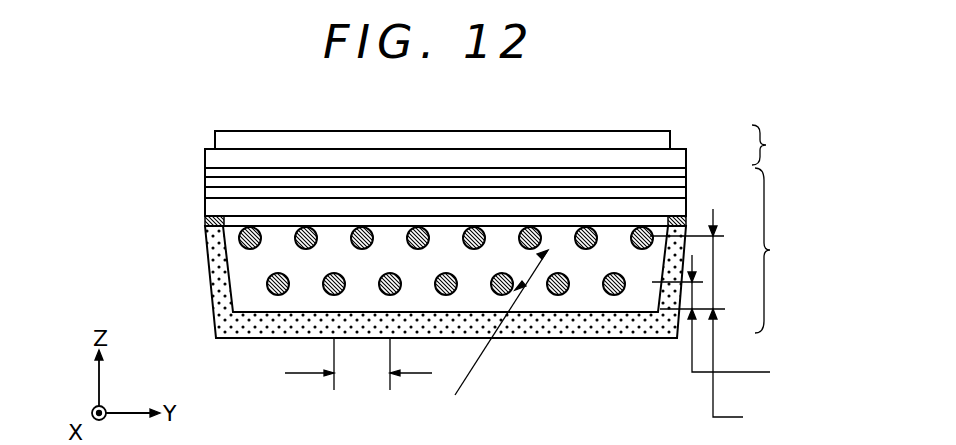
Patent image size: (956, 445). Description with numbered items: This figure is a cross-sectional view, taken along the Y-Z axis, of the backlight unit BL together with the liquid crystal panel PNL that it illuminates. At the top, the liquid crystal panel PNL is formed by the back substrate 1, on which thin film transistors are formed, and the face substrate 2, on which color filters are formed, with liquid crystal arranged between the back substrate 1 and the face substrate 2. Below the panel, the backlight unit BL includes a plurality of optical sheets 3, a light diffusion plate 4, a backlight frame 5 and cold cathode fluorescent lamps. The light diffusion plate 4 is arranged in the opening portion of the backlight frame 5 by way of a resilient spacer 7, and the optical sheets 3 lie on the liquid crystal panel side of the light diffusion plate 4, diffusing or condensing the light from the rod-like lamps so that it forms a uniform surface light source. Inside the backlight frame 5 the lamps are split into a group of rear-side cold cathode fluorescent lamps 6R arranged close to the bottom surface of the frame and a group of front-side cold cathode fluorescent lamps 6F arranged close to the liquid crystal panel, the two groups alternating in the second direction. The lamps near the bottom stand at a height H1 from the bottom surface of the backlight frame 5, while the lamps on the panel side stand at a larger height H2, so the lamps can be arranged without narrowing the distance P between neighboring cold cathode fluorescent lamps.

The back substrate 1 is at (205, 160).
The face substrate 2 is at (215, 140).
The optical sheets 3 is at (190, 165).
The light diffusion plate 4 is at (205, 208).
The backlight frame 5 is at (583, 337).
The front-side cold cathode fluorescent lamps 6F is at (244, 246).
The rear-side cold cathode fluorescent lamps 6R is at (270, 290).
The spacer 7 is at (206, 226).
The liquid crystal panel PNL is at (786, 145).
The backlight unit BL is at (784, 250).
The height of first-kind cold cathode fluorescent lamps H1 is at (696, 313).
The height of second-kind cold cathode fluorescent lamps H2 is at (711, 314).
The distance between cold cathode fluorescent lamps P is at (416, 334).